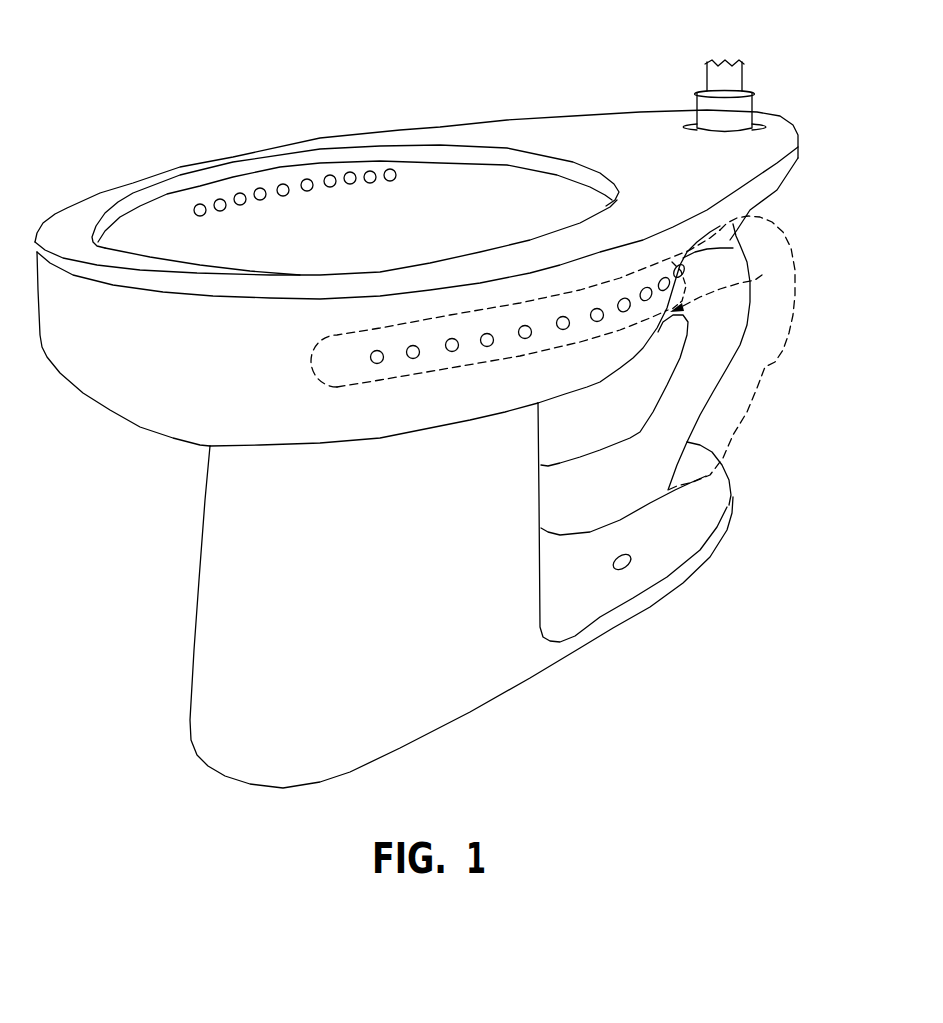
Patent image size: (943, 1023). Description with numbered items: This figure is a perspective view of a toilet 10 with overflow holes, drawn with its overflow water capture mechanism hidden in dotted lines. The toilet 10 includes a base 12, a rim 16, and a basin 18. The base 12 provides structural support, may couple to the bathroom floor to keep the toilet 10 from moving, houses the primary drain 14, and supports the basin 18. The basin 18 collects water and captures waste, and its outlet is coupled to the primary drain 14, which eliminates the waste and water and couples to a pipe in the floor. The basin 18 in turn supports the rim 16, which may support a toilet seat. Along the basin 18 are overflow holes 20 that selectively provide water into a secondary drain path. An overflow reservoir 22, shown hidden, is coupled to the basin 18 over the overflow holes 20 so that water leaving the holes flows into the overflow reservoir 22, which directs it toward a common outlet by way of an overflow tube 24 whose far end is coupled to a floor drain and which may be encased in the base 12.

The toilet 10 is at (787, 87).
The base 12 is at (460, 630).
The primary drain 14 is at (692, 398).
The rim 16 is at (68, 222).
The basin 18 is at (172, 247).
The overflow holes 20 is at (355, 177).
The overflow reservoir 22 is at (333, 362).
The overflow tube 24 is at (773, 363).